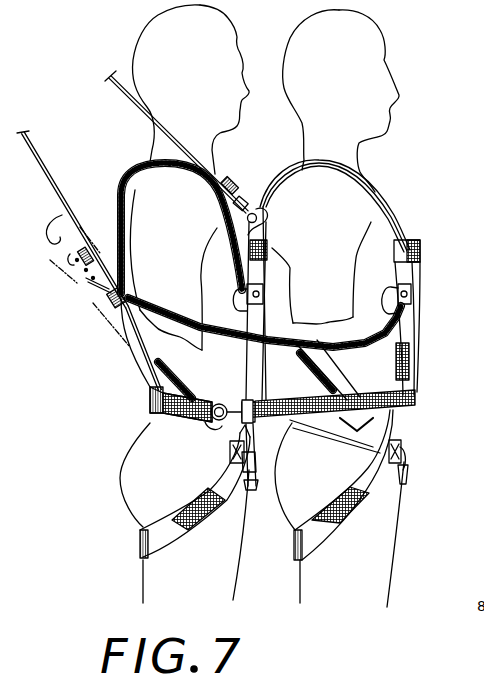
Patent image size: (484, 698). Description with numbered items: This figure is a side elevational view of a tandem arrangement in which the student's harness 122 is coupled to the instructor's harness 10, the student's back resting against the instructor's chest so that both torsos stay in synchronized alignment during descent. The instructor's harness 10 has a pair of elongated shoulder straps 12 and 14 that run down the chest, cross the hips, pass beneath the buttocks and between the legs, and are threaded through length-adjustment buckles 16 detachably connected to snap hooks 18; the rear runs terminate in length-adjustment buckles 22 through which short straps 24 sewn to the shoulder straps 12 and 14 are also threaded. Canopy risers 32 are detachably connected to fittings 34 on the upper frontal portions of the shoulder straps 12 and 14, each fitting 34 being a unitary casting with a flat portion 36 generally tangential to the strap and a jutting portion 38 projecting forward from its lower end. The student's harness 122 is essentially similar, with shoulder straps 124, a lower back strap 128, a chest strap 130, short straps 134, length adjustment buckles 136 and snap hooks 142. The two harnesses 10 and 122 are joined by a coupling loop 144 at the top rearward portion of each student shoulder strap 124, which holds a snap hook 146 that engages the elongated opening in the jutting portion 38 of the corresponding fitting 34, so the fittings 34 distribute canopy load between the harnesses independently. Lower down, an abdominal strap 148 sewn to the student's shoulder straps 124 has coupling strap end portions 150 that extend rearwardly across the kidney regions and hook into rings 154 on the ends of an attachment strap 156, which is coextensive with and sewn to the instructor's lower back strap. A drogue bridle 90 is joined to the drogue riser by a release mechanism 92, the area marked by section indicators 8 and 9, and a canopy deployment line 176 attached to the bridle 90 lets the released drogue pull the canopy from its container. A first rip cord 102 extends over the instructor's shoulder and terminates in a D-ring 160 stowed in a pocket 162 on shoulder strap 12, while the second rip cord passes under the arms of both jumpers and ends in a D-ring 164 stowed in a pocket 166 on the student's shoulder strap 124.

The section line 8- 8 is at (56, 269).
The section line 9- 9 is at (88, 233).
The harness 10 is at (116, 152).
The shoulder strap 12 is at (245, 355).
The shoulder strap 14 is at (483, 470).
The length-adjustment buckle 16 is at (251, 485).
The snap hook 18 is at (249, 451).
The length-adjustment buckle 22 is at (205, 428).
The short strap 24 is at (240, 440).
The riser 32 is at (121, 89).
The fitting 34 is at (230, 186).
The flat portion 36 is at (223, 207).
The jutting portion 38 is at (237, 199).
The drogue bridle 90 is at (38, 171).
The release mechanism 92 is at (86, 297).
The first rip cord 102 is at (167, 158).
The student's harness 122 is at (398, 183).
The shoulder strap 124 is at (382, 222).
The lower back strap 128 is at (333, 423).
The chest strap 130 is at (420, 249).
The short strap 134 is at (373, 433).
The length adjustment buckle 136 is at (403, 486).
The snap hook 142 is at (404, 450).
The coupling loop 144 is at (280, 200).
The snap hook 146 is at (246, 208).
The abdominal strap 148 is at (415, 400).
The coupling strap end portion 150 is at (296, 399).
The ring 154 is at (224, 404).
The attachment strap 156 is at (155, 417).
The D-ring 160 is at (230, 297).
The pocket 162 is at (263, 278).
The D-ring 164 is at (380, 289).
The pocket 166 is at (404, 284).
The canopy deployment line 176 is at (56, 212).